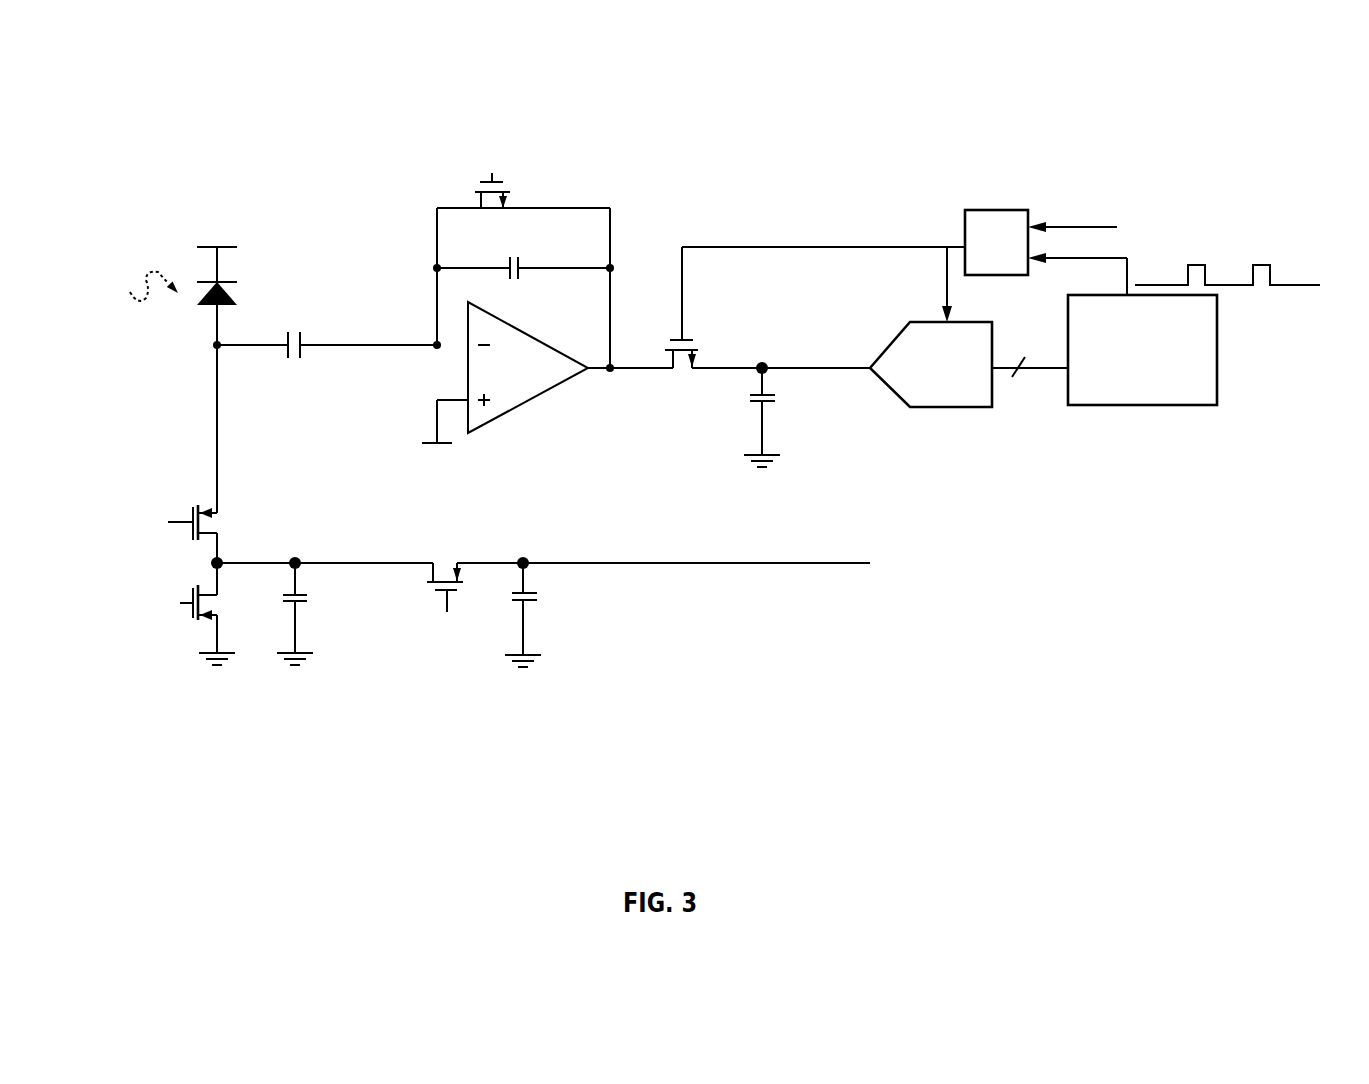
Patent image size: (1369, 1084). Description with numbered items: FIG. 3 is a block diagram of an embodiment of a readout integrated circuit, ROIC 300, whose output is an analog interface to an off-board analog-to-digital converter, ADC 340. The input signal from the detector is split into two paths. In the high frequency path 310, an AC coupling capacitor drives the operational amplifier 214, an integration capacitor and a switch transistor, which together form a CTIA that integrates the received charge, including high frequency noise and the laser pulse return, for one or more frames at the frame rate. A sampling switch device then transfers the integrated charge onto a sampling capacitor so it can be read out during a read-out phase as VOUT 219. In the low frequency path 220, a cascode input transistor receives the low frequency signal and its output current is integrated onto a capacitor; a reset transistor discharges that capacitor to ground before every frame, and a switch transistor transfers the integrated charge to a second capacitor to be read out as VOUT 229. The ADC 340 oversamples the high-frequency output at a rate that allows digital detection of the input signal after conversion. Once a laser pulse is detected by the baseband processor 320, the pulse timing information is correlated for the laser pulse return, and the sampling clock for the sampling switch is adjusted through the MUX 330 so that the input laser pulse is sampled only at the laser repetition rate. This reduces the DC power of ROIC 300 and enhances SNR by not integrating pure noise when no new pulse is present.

The ROIC 300 is at (880, 656).
The path 310 is at (372, 328).
The operational amplifier 214 is at (538, 390).
The VOUT 219 is at (781, 391).
The low frequency path 220 is at (218, 577).
The VOUT 229 is at (556, 601).
The MUX 330 is at (1131, 250).
The analog-to-digital converter (ADC) 340 is at (969, 376).
The baseband processor 320 is at (1142, 363).